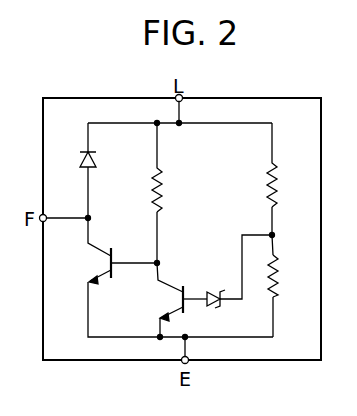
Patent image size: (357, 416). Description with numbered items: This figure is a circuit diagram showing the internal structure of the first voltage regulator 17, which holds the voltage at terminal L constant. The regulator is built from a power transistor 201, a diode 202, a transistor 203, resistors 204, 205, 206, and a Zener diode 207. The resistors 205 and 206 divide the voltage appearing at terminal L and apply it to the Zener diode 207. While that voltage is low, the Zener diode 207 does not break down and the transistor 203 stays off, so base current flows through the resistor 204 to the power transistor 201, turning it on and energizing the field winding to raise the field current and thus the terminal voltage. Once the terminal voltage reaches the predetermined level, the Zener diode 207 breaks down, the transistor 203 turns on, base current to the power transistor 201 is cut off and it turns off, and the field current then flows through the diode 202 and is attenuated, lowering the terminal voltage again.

The first voltage regulator 17 is at (247, 361).
The power transistor 201 is at (105, 262).
The diode 202 is at (94, 158).
The transistor 203 is at (172, 299).
The resistor 204 is at (168, 200).
The resistor 205 is at (270, 163).
The resistor 206 is at (276, 280).
The Zener diode 207 is at (207, 291).